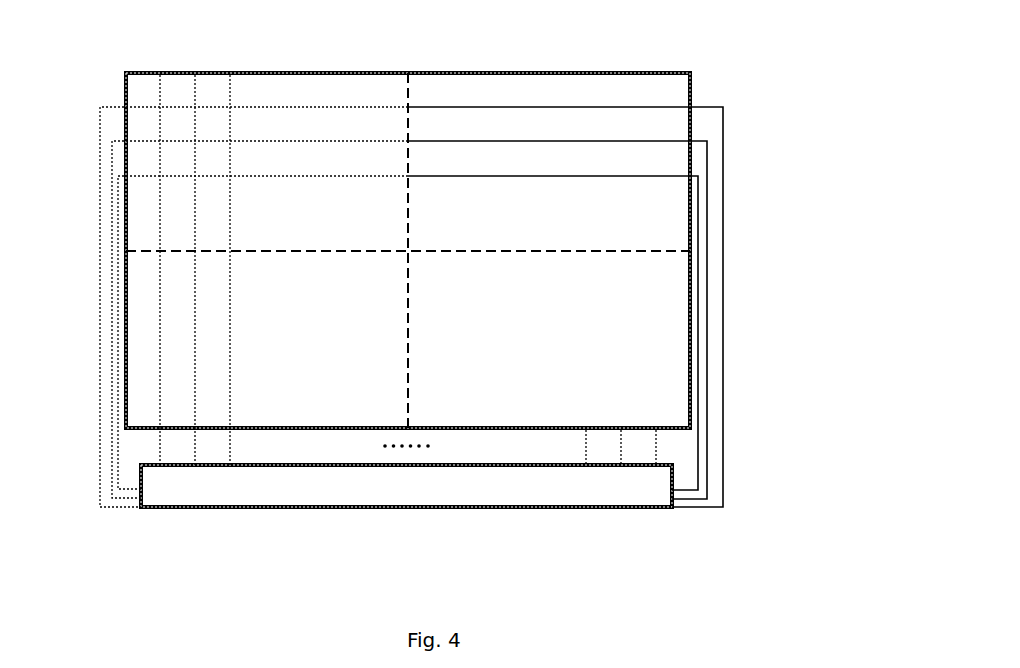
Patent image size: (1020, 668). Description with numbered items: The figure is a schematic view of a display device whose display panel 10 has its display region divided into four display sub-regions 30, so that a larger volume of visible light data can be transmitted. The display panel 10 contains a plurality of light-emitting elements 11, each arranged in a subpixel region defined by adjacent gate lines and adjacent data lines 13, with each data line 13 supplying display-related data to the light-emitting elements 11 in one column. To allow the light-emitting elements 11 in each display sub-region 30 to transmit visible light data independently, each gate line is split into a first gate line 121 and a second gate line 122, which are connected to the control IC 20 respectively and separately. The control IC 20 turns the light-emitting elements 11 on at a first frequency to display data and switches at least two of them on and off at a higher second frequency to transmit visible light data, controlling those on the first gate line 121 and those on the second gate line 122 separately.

The display panel 10 is at (634, 69).
The light-emitting elements 11 is at (140, 88).
The first gate line 121 is at (305, 103).
The second gate line 122 is at (500, 103).
The data lines 13 is at (160, 242).
The control IC 20 is at (630, 495).
The display sub-regions 30 is at (638, 352).